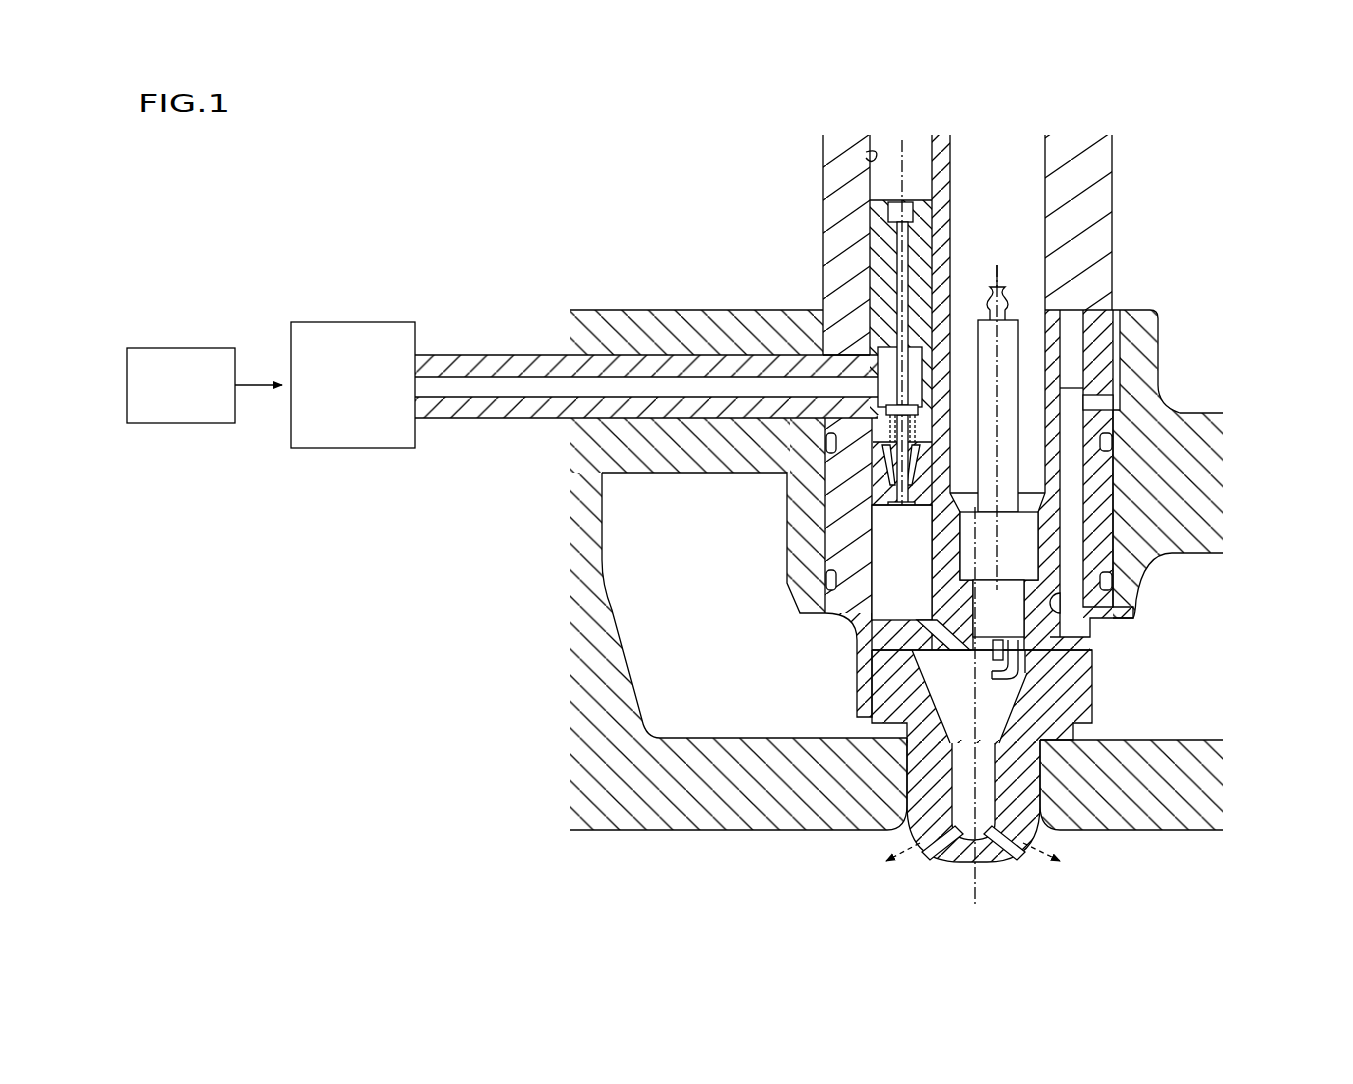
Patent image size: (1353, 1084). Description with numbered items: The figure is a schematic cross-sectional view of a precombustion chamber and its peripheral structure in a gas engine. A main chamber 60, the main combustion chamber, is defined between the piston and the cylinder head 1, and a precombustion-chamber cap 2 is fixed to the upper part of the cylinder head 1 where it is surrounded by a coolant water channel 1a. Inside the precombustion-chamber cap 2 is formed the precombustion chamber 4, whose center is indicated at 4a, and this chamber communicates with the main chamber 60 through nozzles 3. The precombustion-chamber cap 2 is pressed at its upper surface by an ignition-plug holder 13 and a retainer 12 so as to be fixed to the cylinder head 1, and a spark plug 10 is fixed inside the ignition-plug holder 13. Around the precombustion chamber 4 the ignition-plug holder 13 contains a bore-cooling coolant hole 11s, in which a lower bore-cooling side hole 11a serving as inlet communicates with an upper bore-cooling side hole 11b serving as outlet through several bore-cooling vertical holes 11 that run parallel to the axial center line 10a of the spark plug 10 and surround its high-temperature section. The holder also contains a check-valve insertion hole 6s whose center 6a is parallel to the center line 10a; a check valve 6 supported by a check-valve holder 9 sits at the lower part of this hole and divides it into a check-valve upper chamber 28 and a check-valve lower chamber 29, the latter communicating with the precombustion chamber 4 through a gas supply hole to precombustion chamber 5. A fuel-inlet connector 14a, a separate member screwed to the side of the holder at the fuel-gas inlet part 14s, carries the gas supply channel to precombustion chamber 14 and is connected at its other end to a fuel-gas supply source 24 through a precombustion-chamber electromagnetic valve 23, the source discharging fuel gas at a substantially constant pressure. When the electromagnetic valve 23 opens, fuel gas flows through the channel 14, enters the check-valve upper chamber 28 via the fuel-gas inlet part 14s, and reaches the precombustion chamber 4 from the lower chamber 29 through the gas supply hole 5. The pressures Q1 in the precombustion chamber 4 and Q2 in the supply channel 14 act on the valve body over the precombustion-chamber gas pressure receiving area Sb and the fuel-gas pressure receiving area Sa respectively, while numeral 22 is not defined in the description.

The cylinder head 1 is at (1217, 437).
The coolant water channel 1a is at (1159, 647).
The precombustion-chamber cap 2 is at (1000, 853).
The nozzles 3 is at (940, 858).
The precombustion chamber 4 is at (937, 697).
The center of the precombustion chamber 4a is at (967, 733).
The gas supply hole to precombustion chamber 5 is at (925, 631).
The check valve 6 is at (860, 474).
The center of the check-valve insertion hole 6a is at (897, 192).
The check-valve insertion hole 6s is at (866, 151).
The check-valve holder 9 is at (883, 242).
The spark plug 10 is at (1017, 518).
The axial center line of the spark plug 10a is at (998, 281).
The bore-cooling vertical holes 11 is at (1110, 447).
The lower bore-cooling side hole 11a is at (1088, 623).
The upper bore-cooling side hole 11b is at (1097, 402).
The bore-cooling coolant hole 11s is at (1110, 483).
The retainer 12 is at (1098, 223).
The ignition-plug holder 13 is at (1100, 533).
The gas supply channel to precombustion chamber 14 is at (674, 378).
The fuel-inlet connector 14a is at (680, 410).
The fuel-gas inlet part 14s is at (856, 348).
The cylinder head upper wall 22 is at (610, 338).
The precombustion-chamber electromagnetic valve 23 is at (348, 322).
The fuel-gas supply source 24 is at (173, 347).
The check-valve upper chamber 28 is at (890, 357).
The check-valve lower chamber 29 is at (843, 627).
The main chamber 60 is at (864, 924).
The gas pressure in the precombustion chamber Q1 is at (902, 562).
The fuel-gas pressure of the gas supply channel Q2 is at (900, 377).
The fuel-gas pressure receiving area Sa is at (953, 362).
The precombustion-chamber gas pressure receiving area Sb is at (893, 508).